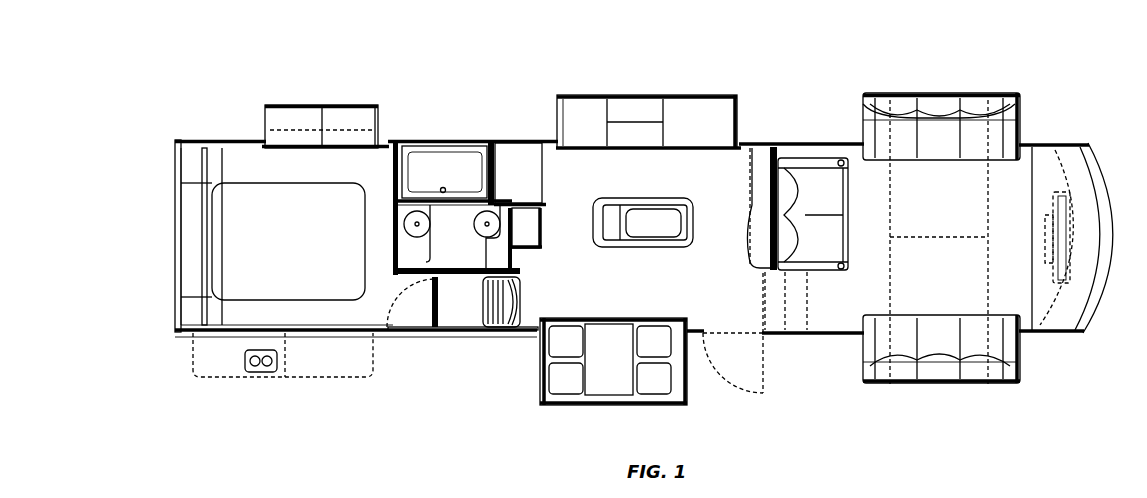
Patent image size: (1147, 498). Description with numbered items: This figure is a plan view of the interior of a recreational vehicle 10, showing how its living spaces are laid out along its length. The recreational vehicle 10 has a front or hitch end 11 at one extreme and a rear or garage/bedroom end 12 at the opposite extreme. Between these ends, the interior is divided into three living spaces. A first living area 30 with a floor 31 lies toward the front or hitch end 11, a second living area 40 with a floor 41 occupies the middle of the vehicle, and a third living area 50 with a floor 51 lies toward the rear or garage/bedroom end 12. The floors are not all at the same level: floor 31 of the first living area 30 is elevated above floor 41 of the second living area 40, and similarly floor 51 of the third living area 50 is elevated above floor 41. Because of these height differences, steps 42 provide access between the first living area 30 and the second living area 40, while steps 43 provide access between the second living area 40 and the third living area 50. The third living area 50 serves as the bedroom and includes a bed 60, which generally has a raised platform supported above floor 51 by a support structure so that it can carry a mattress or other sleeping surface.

The recreational vehicle 10 is at (413, 47).
The front or hitch end 11 is at (1107, 160).
The rear or garage/bedroom end 12 is at (175, 158).
The first living area 30 is at (1008, 283).
The floor 31 is at (879, 301).
The second living area 40 is at (712, 303).
The floor 41 is at (639, 291).
The steps 42 is at (796, 303).
The steps 43 is at (498, 309).
The third living area 50 is at (297, 88).
The floor 51 is at (391, 186).
The bed 60 is at (265, 216).